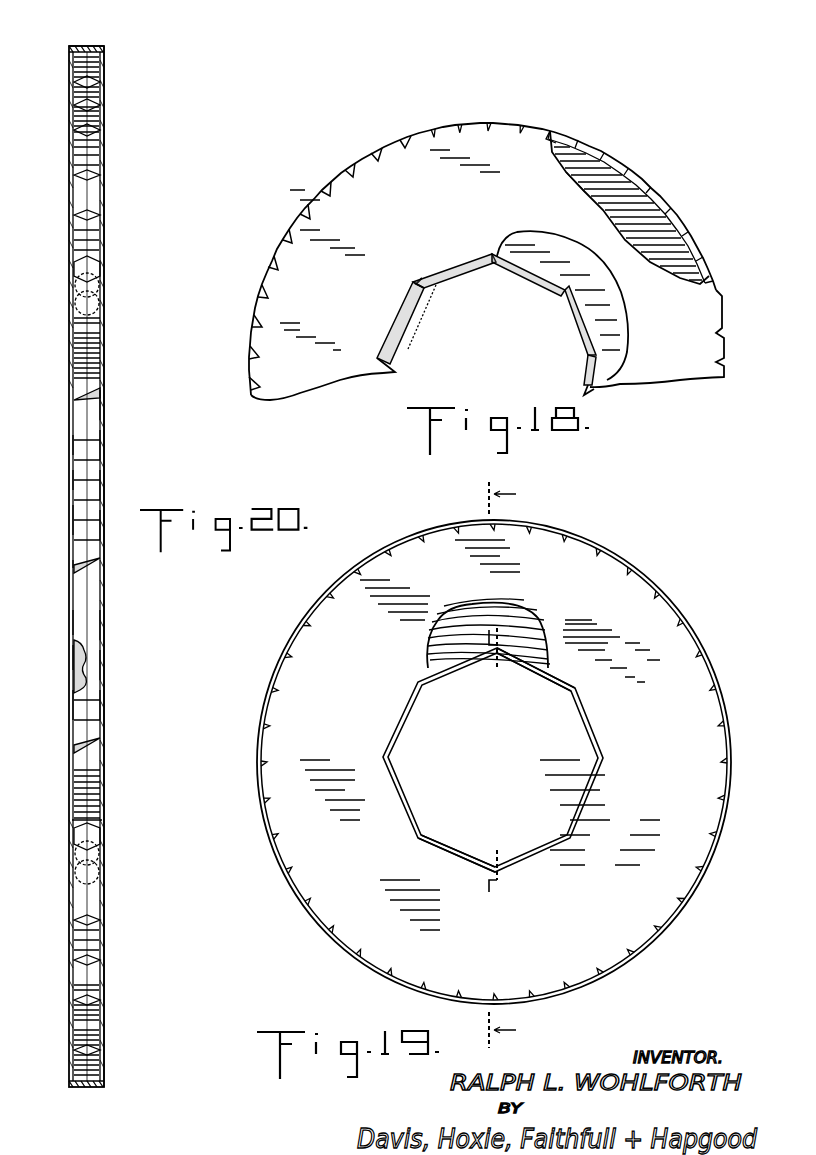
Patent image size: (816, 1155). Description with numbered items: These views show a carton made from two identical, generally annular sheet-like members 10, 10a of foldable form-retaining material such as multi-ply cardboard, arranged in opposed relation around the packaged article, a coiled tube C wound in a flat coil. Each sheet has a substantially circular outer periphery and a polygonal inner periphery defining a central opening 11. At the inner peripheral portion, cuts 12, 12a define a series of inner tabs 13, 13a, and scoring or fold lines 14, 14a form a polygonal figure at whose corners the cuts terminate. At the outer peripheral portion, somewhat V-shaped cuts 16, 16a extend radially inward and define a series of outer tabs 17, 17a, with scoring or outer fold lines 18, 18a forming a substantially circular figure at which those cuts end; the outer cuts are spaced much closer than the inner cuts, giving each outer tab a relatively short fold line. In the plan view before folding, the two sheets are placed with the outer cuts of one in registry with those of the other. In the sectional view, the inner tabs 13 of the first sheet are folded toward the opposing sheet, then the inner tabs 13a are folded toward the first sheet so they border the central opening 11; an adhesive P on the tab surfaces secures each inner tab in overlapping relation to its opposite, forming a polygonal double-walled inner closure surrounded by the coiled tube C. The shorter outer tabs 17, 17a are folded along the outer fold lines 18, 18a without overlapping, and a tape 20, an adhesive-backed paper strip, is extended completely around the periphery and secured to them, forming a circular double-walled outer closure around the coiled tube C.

In FIG. 18, the sheet-like member 10 is at (383, 161).
In FIG. 19, the sheet-like member 10 is at (640, 620).
In FIG. 20, the sheet-like member 10 is at (69, 199).
In FIG. 18, the sheet-like member 10a is at (598, 194).
In FIG. 20, the sheet-like member 10a is at (102, 191).
In FIG. 19, the central opening 11 is at (422, 735).
In FIG. 18, the cuts 12 is at (430, 272).
In FIG. 18, the cuts 12a is at (586, 388).
In FIG. 18, the inner tabs 13 is at (424, 292).
In FIG. 20, the inner tabs 13 is at (78, 307).
In FIG. 18, the inner tabs 13a is at (567, 294).
In FIG. 19, the inner tabs 13a is at (568, 686).
In FIG. 20, the inner tabs 13a is at (96, 337).
In FIG. 18, the fold lines 14 is at (396, 315).
In FIG. 19, the fold lines 14 is at (407, 733).
In FIG. 20, the fold lines 14 is at (68, 448).
In FIG. 18, the fold lines 14a is at (520, 262).
In FIG. 20, the fold lines 14a is at (102, 448).
In FIG. 18, the cuts 16 is at (474, 124).
In FIG. 19, the cuts 16 is at (404, 546).
In FIG. 20, the cuts 16 is at (74, 128).
In FIG. 18, the cuts 16a is at (550, 130).
In FIG. 20, the cuts 16a is at (98, 125).
In FIG. 18, the outer tabs 17 is at (294, 209).
In FIG. 20, the outer tabs 17 is at (72, 67).
In FIG. 18, the outer tabs 17a is at (605, 160).
In FIG. 20, the outer tabs 17a is at (103, 74).
In FIG. 19, the outer fold lines 18 is at (646, 574).
In FIG. 18, the outer fold lines 18a is at (692, 264).
In FIG. 19, the tape 20 is at (720, 633).
In FIG. 20, the tape 20 is at (92, 46).
In FIG. 19, the coiled tube C is at (473, 646).
In FIG. 20, the coiled tube C is at (102, 293).
In FIG. 18, the adhesive P is at (436, 318).
In FIG. 20, the adhesive P is at (78, 678).